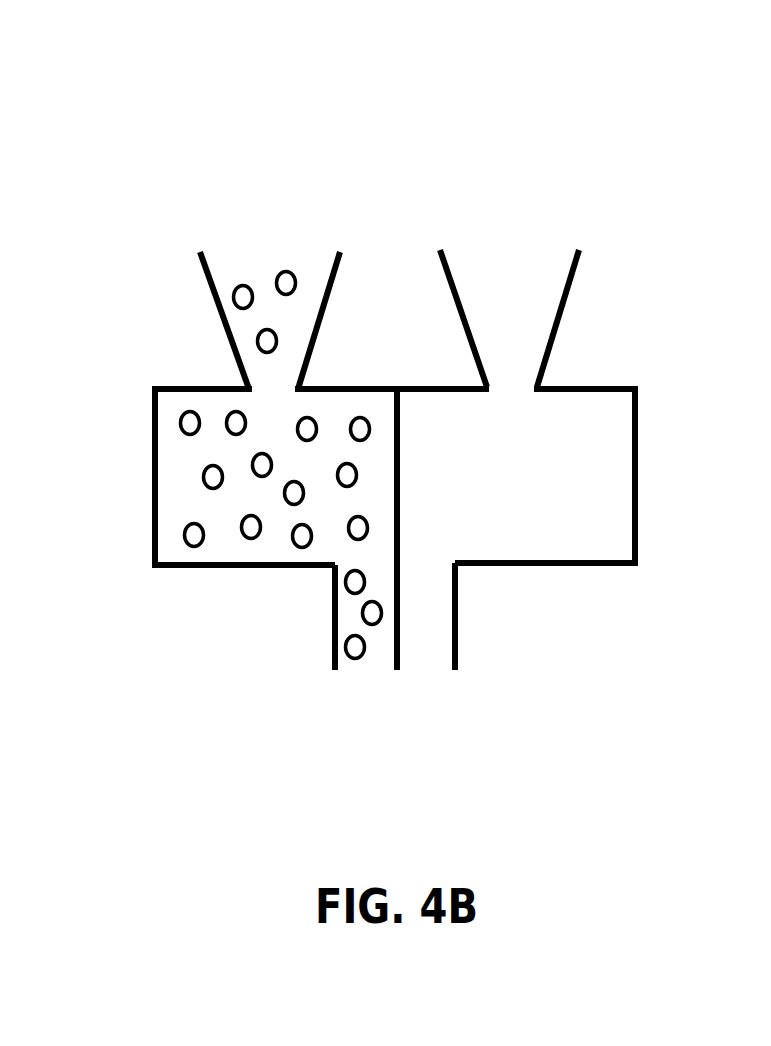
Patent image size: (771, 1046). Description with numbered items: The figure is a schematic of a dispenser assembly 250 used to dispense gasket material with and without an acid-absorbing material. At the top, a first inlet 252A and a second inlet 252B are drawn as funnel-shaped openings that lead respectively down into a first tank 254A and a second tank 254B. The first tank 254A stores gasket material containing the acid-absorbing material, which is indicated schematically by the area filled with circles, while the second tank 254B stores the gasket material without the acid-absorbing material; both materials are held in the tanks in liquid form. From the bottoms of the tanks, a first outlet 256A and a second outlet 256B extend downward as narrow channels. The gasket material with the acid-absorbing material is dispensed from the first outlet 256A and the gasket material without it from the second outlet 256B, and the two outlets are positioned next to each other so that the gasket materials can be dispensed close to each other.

The dispenser assembly 250 is at (332, 122).
The first inlet 252A is at (219, 238).
The second inlet 252B is at (522, 245).
The first tank 254A is at (155, 497).
The second tank 254B is at (636, 503).
The first outlet 256A is at (348, 702).
The second outlet 256B is at (423, 716).